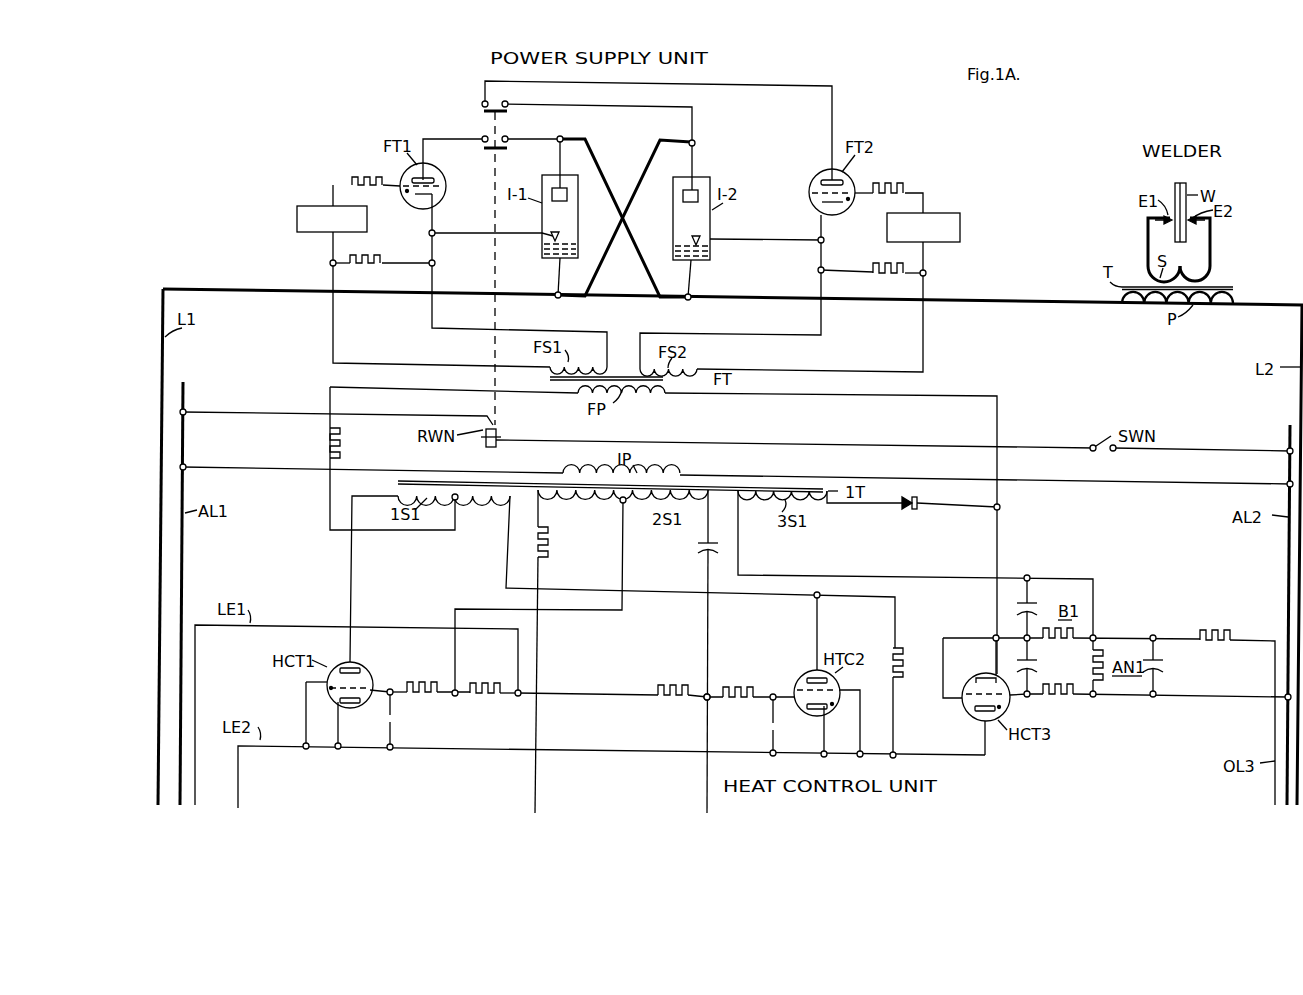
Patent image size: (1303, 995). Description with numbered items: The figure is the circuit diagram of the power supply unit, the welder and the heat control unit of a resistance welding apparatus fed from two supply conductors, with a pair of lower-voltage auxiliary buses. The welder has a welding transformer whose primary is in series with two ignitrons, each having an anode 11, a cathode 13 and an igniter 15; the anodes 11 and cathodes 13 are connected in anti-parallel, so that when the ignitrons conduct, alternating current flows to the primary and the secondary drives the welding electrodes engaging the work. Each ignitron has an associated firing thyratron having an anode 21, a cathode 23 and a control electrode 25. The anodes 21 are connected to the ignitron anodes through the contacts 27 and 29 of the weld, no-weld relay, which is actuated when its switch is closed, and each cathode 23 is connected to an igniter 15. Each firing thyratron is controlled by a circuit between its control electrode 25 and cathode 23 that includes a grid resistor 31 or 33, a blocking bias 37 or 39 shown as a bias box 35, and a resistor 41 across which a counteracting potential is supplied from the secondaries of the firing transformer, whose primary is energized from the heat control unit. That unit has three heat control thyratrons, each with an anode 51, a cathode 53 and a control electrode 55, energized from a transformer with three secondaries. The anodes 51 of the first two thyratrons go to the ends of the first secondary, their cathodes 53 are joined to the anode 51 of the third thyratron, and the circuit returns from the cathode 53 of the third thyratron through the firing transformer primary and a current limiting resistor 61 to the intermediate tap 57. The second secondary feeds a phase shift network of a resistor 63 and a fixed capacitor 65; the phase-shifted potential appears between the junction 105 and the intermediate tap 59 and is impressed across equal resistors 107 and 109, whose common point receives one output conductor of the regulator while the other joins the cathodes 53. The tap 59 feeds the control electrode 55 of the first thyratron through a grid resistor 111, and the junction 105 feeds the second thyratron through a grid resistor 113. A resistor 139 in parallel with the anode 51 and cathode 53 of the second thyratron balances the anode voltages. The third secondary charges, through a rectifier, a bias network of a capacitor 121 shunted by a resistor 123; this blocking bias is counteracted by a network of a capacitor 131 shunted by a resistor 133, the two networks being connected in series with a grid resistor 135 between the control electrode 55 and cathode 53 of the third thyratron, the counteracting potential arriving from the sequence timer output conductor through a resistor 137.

The contact of weld, no-weld relay 29 is at (506, 113).
The contact of weld, no-weld relay 27 is at (506, 150).
The anode of firing thyratron 21 is at (434, 172).
The control electrode of firing thyratron 25 is at (449, 178).
The cathode of firing thyratron 23 is at (425, 197).
The grid resistor 31 is at (352, 172).
The bias source 35 is at (308, 203).
The blocking bias 39 is at (378, 266).
The anode of ignitron 11 is at (568, 195).
The igniter of ignitron 15 is at (562, 233).
The cathode of ignitron 13 is at (545, 262).
The grid resistor 33 is at (877, 178).
The blocking bias 37 is at (942, 213).
The resistor 41 is at (892, 273).
The current limiting resistor 61 is at (327, 437).
The intermediate tap of secondary 1S1 57 is at (457, 500).
The intermediate tap of secondary 2S1 59 is at (620, 502).
The resistor 63 is at (550, 558).
The fixed capacitor 65 is at (698, 547).
The anode of heat control thyratron 51 is at (355, 668).
The control electrode of heat control thyratron 55 is at (363, 690).
The cathode of heat control thyratron 53 is at (345, 705).
The grid resistor 111 is at (413, 695).
The resistor 109 is at (490, 682).
The resistor 107 is at (685, 687).
The junction 105 is at (702, 702).
The grid resistor 113 is at (748, 698).
The resistor 139 is at (902, 647).
The capacitor 121 is at (1032, 605).
The resistor 123 is at (1045, 640).
The resistor 133 is at (1092, 663).
The grid resistor 135 is at (1063, 695).
The capacitor 131 is at (1160, 667).
The resistor 137 is at (1215, 628).